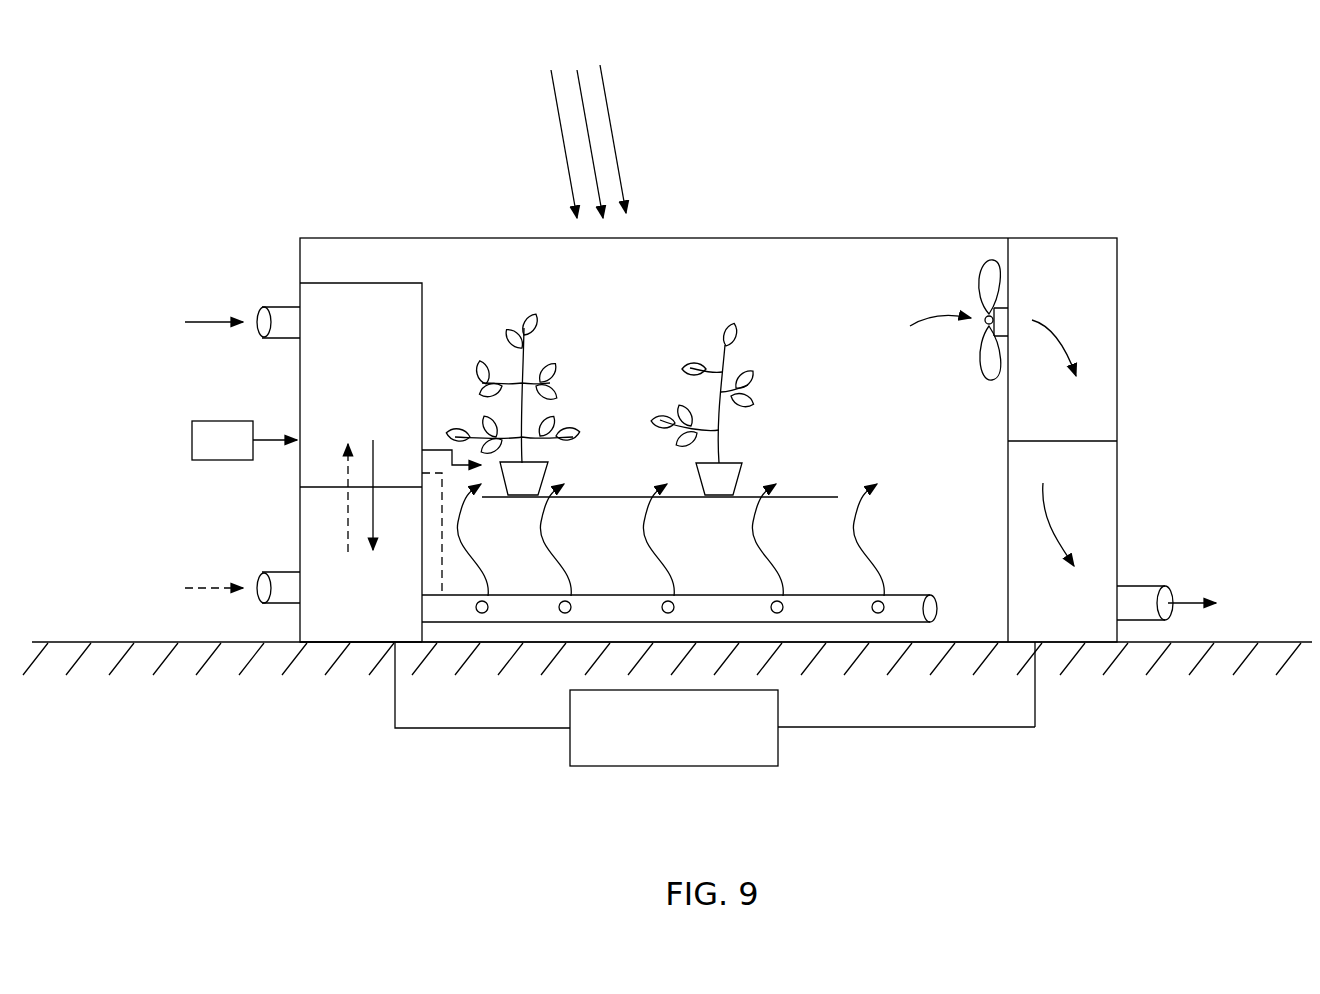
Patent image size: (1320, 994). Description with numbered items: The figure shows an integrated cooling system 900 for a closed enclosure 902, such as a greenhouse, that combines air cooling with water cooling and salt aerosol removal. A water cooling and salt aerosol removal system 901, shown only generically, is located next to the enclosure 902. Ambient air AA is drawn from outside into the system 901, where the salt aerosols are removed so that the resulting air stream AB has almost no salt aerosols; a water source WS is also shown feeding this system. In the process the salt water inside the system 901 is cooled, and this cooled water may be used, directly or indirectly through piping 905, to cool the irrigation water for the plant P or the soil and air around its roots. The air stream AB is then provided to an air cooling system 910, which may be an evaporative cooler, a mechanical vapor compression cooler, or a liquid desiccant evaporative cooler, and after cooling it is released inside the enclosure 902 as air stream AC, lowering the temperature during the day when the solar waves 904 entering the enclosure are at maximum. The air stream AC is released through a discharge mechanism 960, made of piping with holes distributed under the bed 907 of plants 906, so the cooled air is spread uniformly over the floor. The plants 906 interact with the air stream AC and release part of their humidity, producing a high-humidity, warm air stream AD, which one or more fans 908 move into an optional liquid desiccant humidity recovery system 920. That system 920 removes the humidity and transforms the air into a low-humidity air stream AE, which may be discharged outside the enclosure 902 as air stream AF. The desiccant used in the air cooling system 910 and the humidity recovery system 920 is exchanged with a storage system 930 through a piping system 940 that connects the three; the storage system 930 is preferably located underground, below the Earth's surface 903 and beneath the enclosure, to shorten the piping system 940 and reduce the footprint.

The cooling system 900 is at (1208, 78).
The water cooling and salt aerosol removal system 901 is at (337, 338).
The closed enclosure 902 is at (375, 236).
The Earth's surface 903 is at (100, 640).
The solar waves 904 is at (612, 120).
The piping 905 is at (437, 450).
The plants 906 is at (727, 365).
The bed 907 is at (800, 497).
The fans 908 is at (975, 262).
The air cooling system 910 is at (350, 648).
The liquid desiccant humidity recovery (LDHR) system 920 is at (1066, 650).
The storage system 930 is at (738, 770).
The piping system 940 is at (470, 737).
The discharge mechanism 960 is at (916, 583).
The plant P is at (527, 352).
The water supply WS is at (244, 440).
The ambient air AA is at (205, 320).
The air stream AB is at (373, 497).
The air stream AC is at (563, 552).
The high-humidity, warm air stream AD is at (932, 312).
The low-humidity air stream AE is at (1050, 527).
The air stream AF is at (1185, 598).